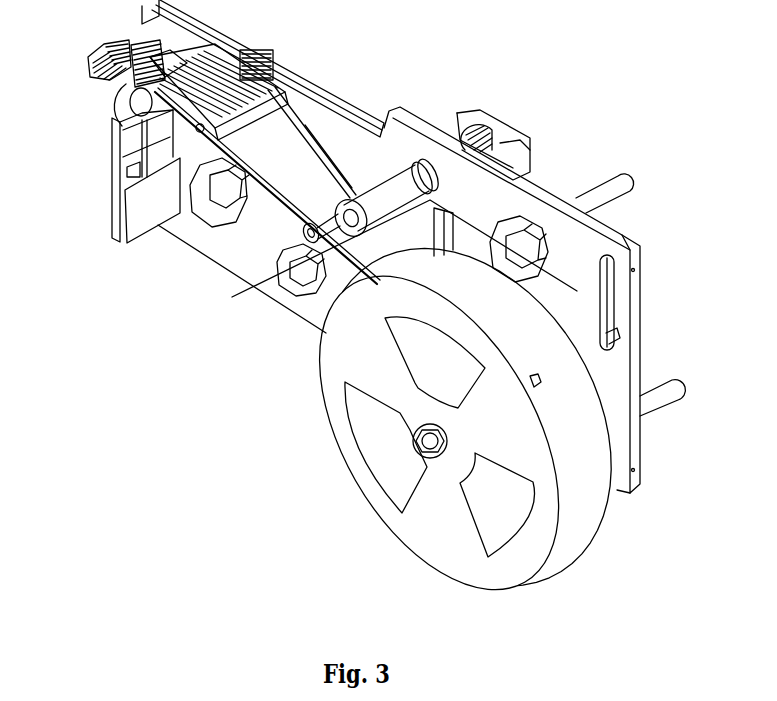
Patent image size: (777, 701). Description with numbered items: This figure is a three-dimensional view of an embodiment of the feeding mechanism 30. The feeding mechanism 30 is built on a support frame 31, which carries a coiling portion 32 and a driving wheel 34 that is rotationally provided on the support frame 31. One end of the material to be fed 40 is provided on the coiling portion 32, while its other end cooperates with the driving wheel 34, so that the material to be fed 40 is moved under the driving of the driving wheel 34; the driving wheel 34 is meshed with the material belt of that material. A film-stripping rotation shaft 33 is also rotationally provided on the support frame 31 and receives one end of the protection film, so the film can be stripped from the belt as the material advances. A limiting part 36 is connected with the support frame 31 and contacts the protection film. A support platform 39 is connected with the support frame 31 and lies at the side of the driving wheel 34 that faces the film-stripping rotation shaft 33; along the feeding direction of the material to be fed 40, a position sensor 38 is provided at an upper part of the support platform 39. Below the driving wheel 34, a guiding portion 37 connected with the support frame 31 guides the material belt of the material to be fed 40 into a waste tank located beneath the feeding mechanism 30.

The feeding mechanism 30 is at (427, 92).
The support frame 31 is at (567, 242).
The coiling portion 32 is at (425, 520).
The film-stripping rotation shaft 33 is at (352, 226).
The driving wheel 34 is at (129, 102).
The limiting part 36 is at (305, 236).
The guiding portion 37 is at (147, 216).
The position sensor 38 is at (278, 72).
The support platform 39 is at (157, 127).
The material to be fed 40 is at (317, 180).